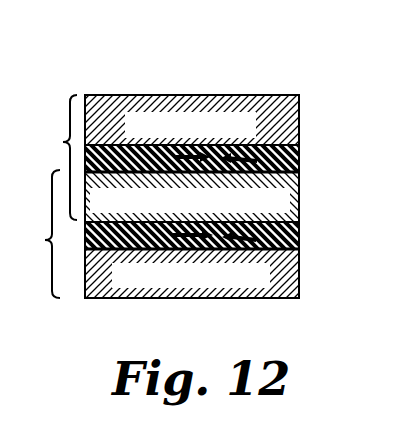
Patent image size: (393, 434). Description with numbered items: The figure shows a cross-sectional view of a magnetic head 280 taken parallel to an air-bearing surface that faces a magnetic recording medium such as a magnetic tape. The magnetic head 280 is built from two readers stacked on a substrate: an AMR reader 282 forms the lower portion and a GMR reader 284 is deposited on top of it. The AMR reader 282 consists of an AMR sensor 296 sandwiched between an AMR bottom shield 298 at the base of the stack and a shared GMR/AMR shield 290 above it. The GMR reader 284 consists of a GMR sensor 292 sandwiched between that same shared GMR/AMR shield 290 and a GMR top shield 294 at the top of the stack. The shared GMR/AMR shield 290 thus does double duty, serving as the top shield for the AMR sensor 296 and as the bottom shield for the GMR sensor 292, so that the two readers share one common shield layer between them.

The magnetic head 280 is at (234, 161).
The AMR reader 282 is at (32, 234).
The GMR reader 284 is at (50, 157).
The shared GMR/AMR shield 290 is at (299, 200).
The GMR sensor 292 is at (299, 172).
The GMR top shield 294 is at (299, 113).
The AMR sensor 296 is at (299, 248).
The AMR bottom shield 298 is at (299, 278).